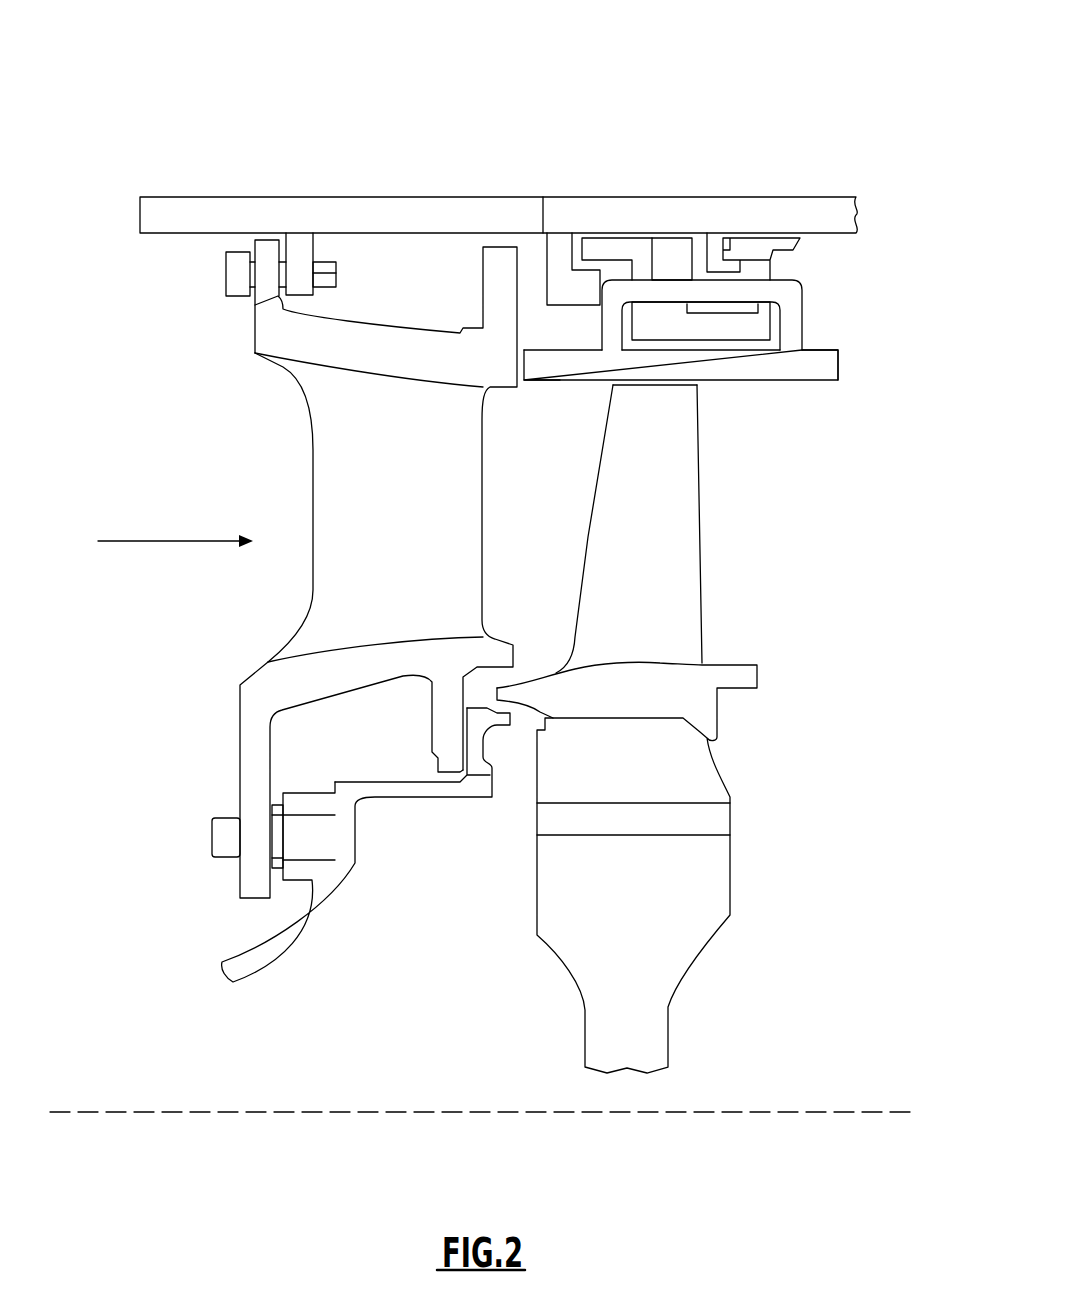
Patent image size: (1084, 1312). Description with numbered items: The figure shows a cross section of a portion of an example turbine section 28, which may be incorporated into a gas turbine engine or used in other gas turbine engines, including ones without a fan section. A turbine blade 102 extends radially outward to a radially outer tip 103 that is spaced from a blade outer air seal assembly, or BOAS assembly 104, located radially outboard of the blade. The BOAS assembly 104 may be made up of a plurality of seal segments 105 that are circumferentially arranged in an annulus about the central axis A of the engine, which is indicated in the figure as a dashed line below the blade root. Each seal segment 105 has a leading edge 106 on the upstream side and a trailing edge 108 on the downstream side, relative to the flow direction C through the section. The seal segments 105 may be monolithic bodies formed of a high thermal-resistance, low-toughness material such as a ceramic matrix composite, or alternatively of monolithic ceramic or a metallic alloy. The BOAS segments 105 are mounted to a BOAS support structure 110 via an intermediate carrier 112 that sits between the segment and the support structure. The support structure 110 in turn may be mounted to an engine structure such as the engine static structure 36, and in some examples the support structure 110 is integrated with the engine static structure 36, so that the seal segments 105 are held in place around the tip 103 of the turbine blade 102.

The turbine section 28 is at (778, 86).
The engine static structure 36 is at (204, 215).
The BOAS support structure 110 is at (762, 205).
The blade outer air seal assembly 104 is at (866, 252).
The intermediate carrier 112 is at (760, 329).
The seal segment 105 is at (827, 356).
The trailing edge 108 is at (840, 368).
The leading edge 106 is at (536, 381).
The radially outer tip 103 is at (681, 387).
The turbine blade 102 is at (685, 503).
The core flow path C is at (130, 540).
The central axis A is at (850, 1112).